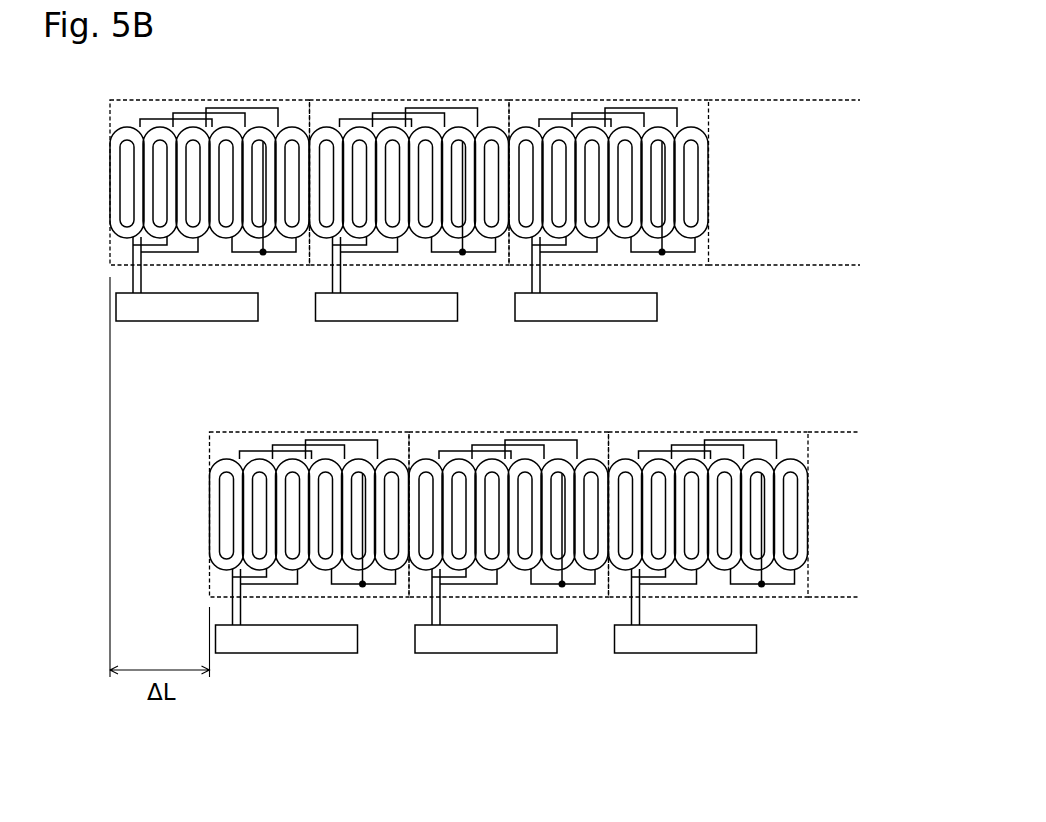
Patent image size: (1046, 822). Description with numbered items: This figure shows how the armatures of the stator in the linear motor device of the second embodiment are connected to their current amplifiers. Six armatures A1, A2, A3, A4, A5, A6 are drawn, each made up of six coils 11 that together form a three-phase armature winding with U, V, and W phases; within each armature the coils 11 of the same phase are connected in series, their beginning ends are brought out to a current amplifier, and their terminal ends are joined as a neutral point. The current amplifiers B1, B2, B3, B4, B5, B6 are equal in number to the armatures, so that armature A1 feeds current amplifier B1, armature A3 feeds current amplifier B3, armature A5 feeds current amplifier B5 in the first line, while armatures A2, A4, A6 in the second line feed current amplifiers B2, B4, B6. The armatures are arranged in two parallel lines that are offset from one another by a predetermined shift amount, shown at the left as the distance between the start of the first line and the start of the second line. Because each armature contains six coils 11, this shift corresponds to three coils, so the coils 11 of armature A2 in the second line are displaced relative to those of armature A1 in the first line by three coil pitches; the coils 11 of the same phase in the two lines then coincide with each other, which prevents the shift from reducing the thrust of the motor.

The coil 11 is at (110, 228).
The armature A1 is at (177, 191).
The armature A2 is at (310, 506).
The armature A3 is at (410, 175).
The armature A4 is at (509, 506).
The armature A5 is at (609, 175).
The armature A6 is at (709, 506).
The current amplifier B1 is at (187, 327).
The current amplifier B2 is at (287, 661).
The current amplifier B3 is at (387, 327).
The current amplifier B4 is at (486, 661).
The current amplifier B5 is at (586, 327).
The current amplifier B6 is at (686, 661).